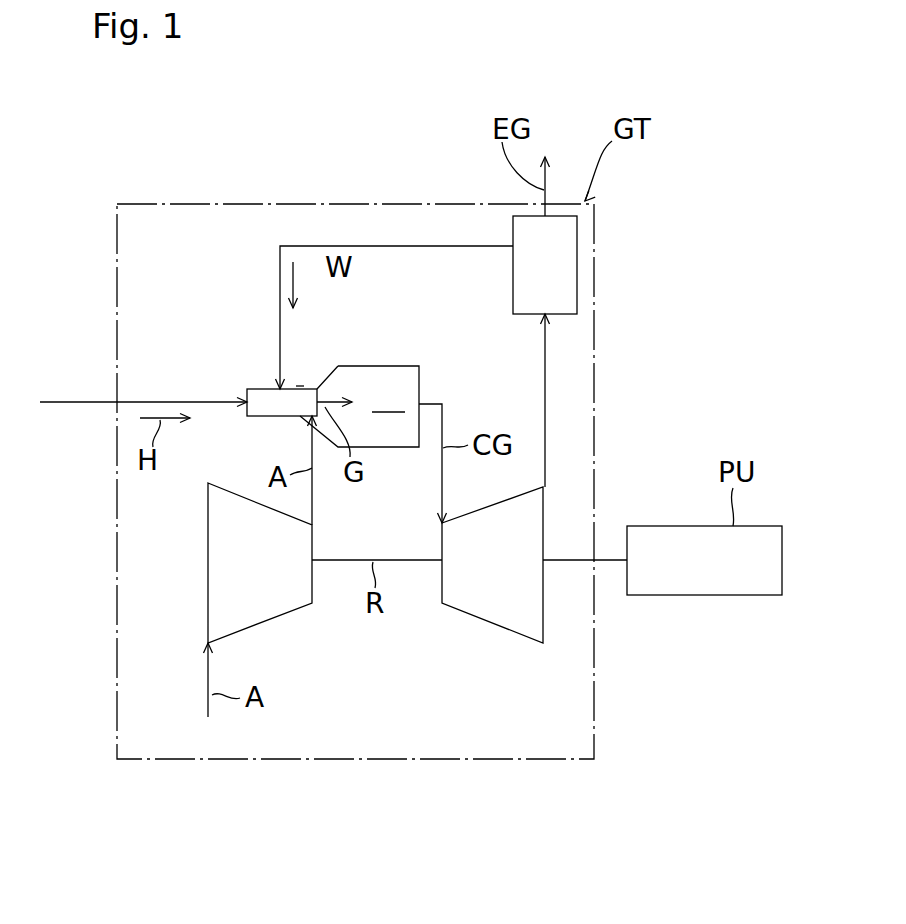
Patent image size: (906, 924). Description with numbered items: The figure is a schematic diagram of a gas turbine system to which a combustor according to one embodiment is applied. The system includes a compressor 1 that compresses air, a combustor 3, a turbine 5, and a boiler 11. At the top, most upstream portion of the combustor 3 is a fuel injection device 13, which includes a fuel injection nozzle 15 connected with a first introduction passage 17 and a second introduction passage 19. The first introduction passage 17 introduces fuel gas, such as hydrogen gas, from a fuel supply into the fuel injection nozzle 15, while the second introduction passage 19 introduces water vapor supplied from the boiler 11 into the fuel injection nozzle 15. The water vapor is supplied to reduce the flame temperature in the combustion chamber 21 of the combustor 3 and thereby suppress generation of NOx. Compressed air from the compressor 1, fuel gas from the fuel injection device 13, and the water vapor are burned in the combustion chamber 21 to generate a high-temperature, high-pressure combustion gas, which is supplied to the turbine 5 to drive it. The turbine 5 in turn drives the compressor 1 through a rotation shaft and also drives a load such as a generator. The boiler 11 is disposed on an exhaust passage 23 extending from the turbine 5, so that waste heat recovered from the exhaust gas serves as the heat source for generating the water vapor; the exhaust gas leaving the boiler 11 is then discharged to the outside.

The compressor 1 is at (255, 628).
The combustor 3 is at (333, 369).
The turbine 5 is at (475, 622).
The boiler 11 is at (577, 251).
The fuel injection device 13 is at (300, 389).
The fuel injection nozzle 15 is at (267, 408).
The first introduction passage 17 is at (167, 400).
The second introduction passage 19 is at (403, 246).
The combustion chamber 21 is at (390, 398).
The exhaust passage 23 is at (545, 381).